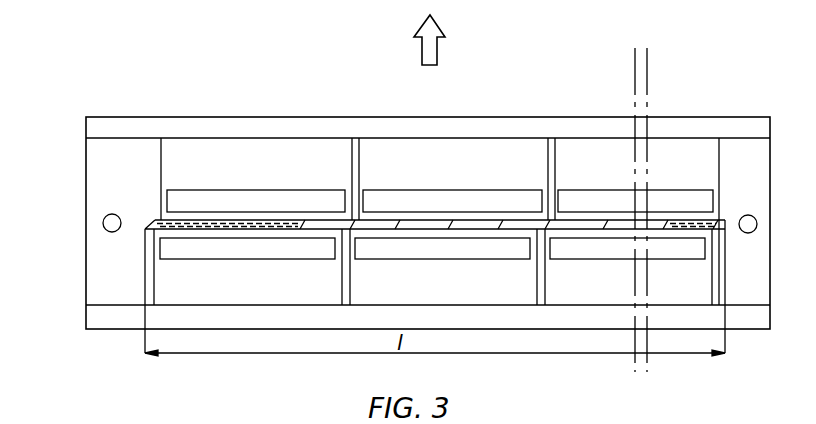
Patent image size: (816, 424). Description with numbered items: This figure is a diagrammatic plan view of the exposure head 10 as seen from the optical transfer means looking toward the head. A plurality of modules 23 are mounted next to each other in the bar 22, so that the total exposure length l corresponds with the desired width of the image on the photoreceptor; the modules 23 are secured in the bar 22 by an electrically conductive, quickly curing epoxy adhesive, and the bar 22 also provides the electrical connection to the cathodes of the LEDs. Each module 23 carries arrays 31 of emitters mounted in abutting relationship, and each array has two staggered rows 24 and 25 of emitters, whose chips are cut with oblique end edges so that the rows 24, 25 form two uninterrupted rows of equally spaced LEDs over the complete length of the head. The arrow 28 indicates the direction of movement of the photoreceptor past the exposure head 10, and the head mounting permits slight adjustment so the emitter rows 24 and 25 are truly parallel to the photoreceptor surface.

The exposure head 10 is at (298, 84).
The bar 22 is at (107, 123).
The module 23 is at (385, 160).
The emitter row 24 is at (163, 217).
The emitter row 25 is at (165, 223).
The arrow 28 is at (442, 52).
The arrays of emitters 31 is at (240, 220).